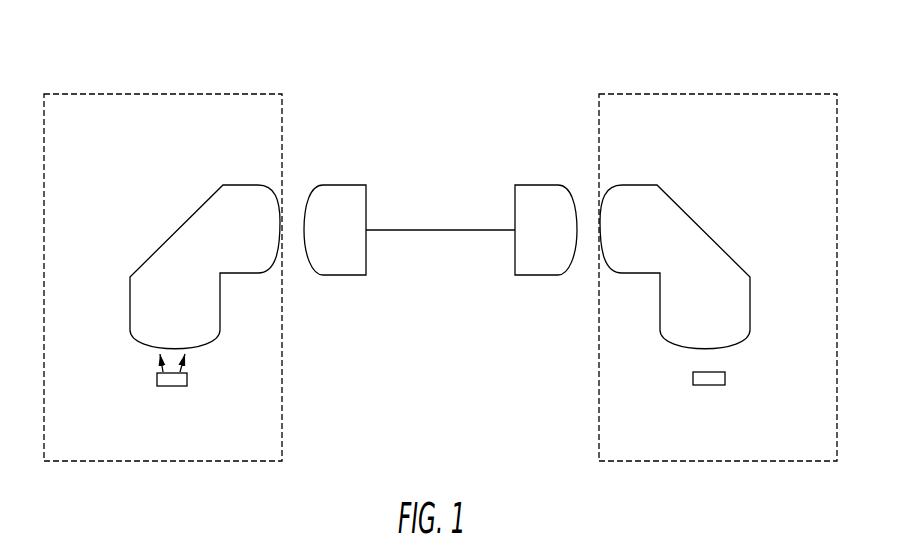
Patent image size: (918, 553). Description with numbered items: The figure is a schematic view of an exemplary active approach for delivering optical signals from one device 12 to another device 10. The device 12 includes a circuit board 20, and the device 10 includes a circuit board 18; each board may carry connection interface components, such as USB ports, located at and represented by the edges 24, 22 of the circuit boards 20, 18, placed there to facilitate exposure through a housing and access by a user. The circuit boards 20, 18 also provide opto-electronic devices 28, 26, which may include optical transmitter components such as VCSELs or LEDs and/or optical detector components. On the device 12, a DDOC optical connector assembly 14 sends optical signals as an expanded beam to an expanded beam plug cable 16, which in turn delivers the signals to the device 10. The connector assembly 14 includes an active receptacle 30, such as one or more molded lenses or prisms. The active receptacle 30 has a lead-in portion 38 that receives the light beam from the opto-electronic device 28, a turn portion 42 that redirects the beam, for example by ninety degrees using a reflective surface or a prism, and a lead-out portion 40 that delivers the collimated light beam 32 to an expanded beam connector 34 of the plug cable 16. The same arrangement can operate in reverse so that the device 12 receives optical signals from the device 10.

The device 10 is at (691, 234).
The device 12 is at (198, 255).
The DDOC optical connector assembly 14 is at (115, 129).
The expanded beam plug cable 16 is at (440, 240).
The circuit board 18 is at (691, 257).
The circuit board 20 is at (198, 269).
The edge 22 is at (599, 380).
The edge 24 is at (198, 250).
The opto-electronic device 26 is at (710, 385).
The opto-electronic device 28 is at (173, 388).
The active receptacle 30 is at (172, 241).
The light beam 32 is at (156, 391).
The expanded beam connector 34 is at (330, 197).
The lead-in portion 38 is at (123, 296).
The lead-out portion 40 is at (172, 241).
The turn portion 42 is at (172, 241).